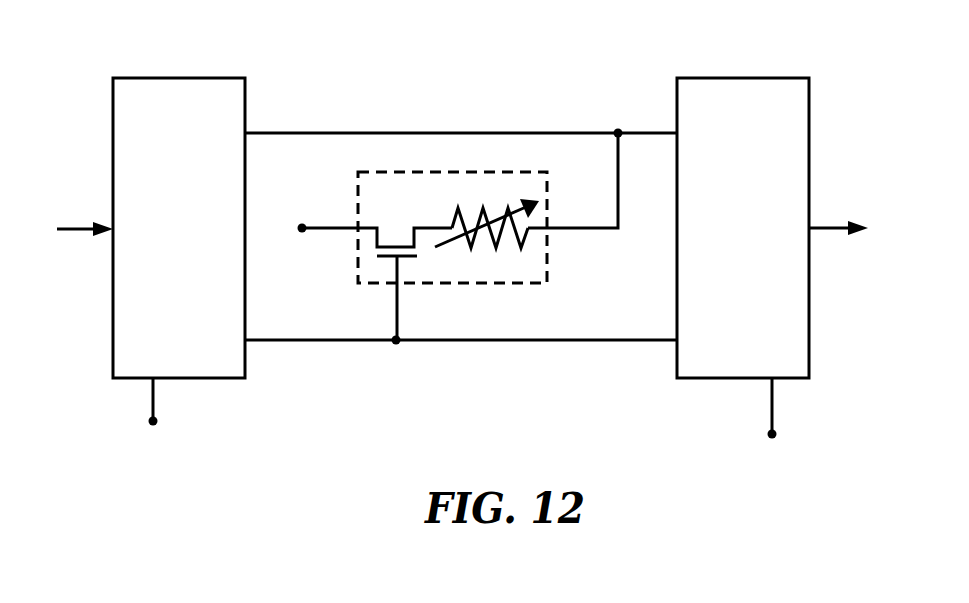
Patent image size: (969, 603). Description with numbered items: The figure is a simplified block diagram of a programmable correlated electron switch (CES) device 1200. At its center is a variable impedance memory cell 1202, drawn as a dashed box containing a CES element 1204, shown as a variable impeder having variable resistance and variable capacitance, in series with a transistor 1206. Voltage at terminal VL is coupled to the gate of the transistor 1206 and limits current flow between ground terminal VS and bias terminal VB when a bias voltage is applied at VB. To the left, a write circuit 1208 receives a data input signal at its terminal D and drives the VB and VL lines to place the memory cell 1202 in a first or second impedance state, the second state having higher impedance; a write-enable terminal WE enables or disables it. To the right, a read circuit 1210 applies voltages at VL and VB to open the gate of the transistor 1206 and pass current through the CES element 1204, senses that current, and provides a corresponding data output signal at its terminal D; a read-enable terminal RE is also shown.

The programmable correlated electron switch (CES) device 1200 is at (523, 446).
The variable impedance memory cell 1202 is at (453, 236).
The CES element 1204 is at (478, 206).
The transistor 1206 is at (376, 241).
The write circuit 1208 is at (181, 78).
The read circuit 1210 is at (745, 78).